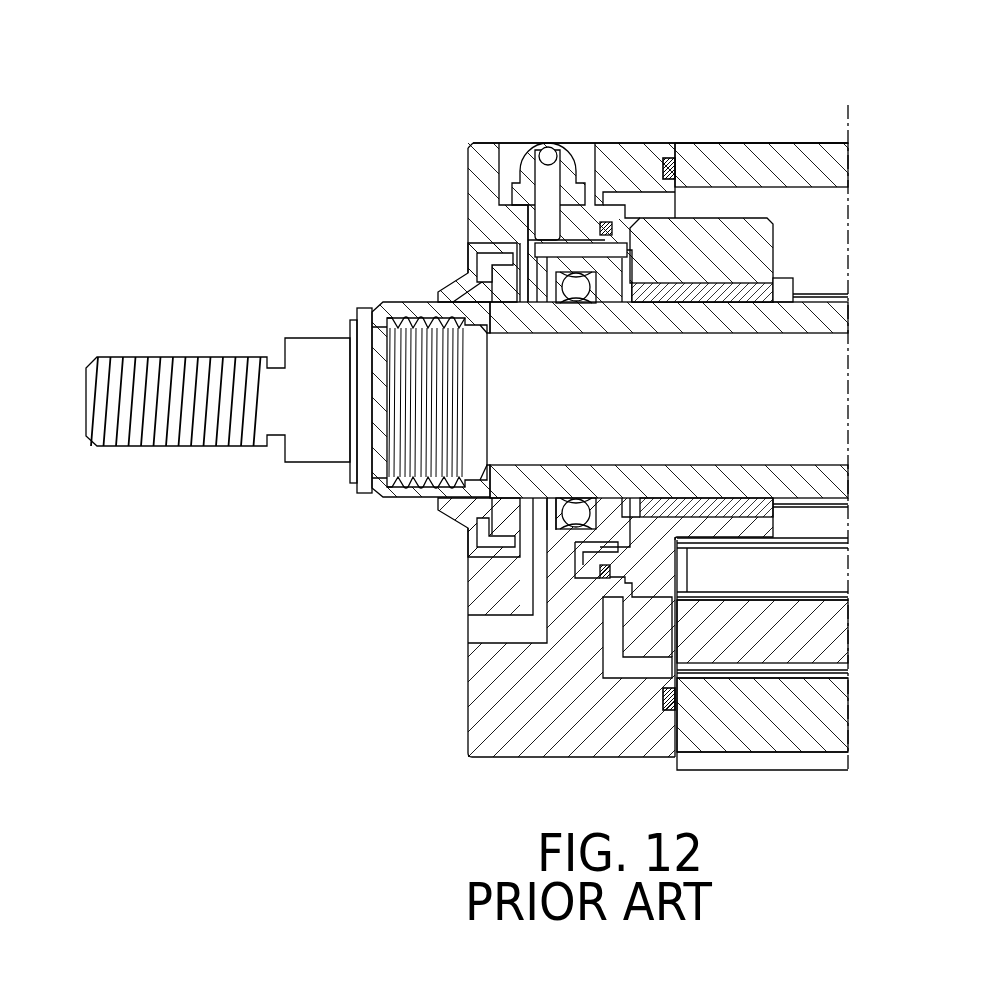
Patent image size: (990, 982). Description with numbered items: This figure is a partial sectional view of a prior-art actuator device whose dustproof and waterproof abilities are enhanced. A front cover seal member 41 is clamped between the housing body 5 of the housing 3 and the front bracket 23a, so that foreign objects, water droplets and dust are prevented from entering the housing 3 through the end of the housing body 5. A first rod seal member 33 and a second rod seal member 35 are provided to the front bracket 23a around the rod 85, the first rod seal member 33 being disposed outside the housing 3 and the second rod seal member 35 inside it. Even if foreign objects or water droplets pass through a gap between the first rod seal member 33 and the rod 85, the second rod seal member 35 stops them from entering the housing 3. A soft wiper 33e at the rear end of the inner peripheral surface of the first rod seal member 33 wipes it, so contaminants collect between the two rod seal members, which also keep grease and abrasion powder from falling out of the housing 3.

The housing 3 is at (806, 140).
The housing body 5 is at (745, 143).
The front cover seal member 41 is at (666, 158).
The rod 85 is at (806, 302).
The second rod seal member 35 is at (580, 277).
The first rod seal member 33 is at (436, 450).
The soft wiper 33e is at (507, 528).
The front bracket 23a is at (477, 710).